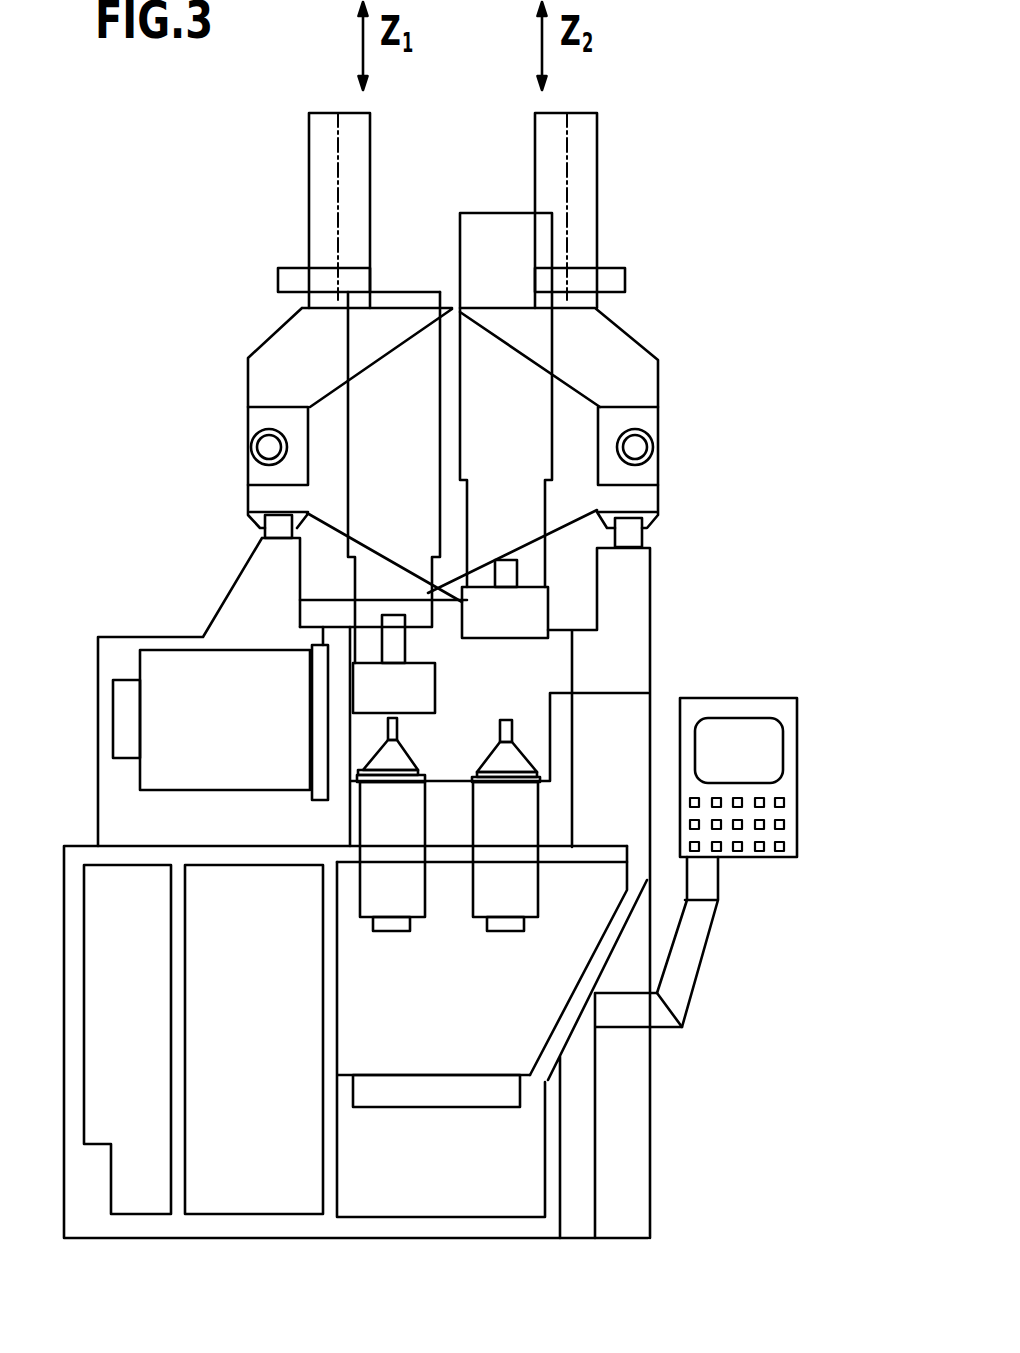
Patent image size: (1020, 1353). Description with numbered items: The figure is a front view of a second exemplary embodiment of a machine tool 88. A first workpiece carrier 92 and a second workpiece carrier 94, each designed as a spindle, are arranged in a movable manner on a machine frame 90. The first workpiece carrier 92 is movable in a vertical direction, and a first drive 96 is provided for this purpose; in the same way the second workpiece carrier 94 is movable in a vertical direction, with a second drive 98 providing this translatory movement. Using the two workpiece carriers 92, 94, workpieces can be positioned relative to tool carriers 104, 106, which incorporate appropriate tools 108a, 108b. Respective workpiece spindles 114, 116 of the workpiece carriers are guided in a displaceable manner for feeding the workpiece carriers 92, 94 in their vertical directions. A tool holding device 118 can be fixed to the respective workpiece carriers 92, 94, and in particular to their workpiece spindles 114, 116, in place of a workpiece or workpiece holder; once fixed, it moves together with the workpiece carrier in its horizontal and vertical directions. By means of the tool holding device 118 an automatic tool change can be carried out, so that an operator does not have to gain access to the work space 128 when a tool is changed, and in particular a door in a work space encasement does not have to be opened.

The machine tool 88 is at (677, 283).
The machine frame 90 is at (272, 1222).
The first workpiece carrier 92 is at (407, 402).
The second workpiece carrier 94 is at (513, 397).
The first drive 96 is at (340, 180).
The second drive 98 is at (563, 180).
The tool carrier 104 is at (373, 891).
The tool carrier 106 is at (488, 905).
The tool 108a is at (390, 727).
The tool 108b is at (513, 727).
The workpiece spindle 114 is at (370, 503).
The workpiece spindle 116 is at (527, 500).
The tool holding device 118 is at (370, 680).
The work space 128 is at (560, 645).